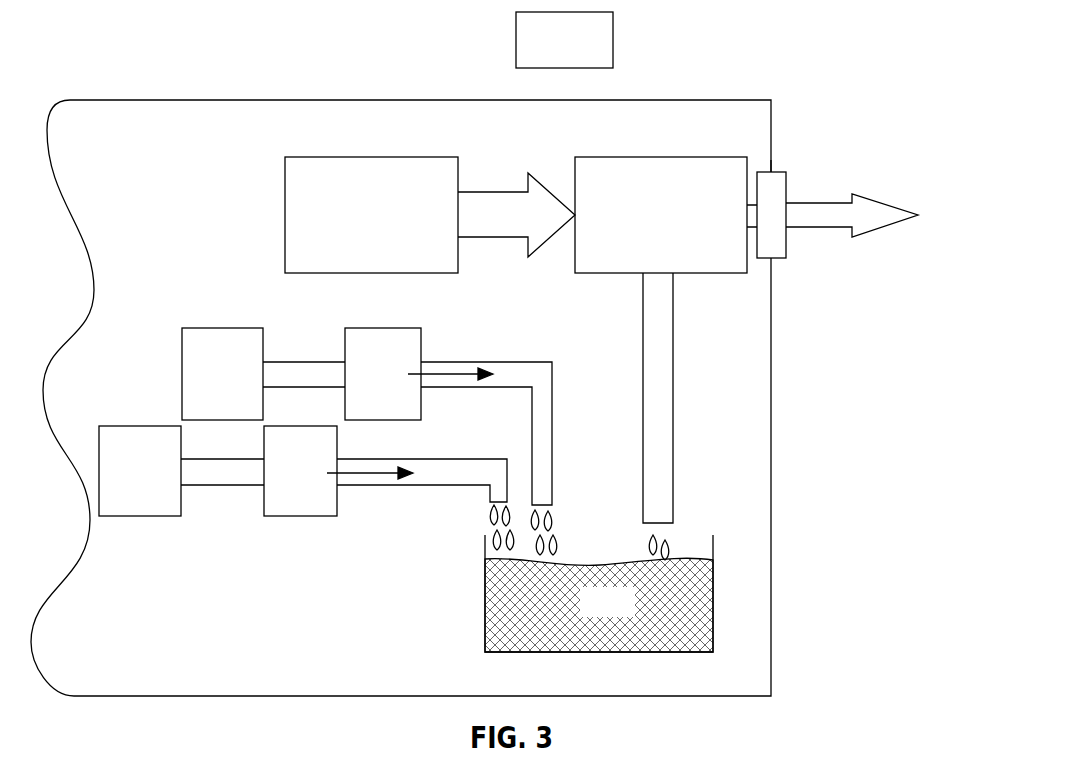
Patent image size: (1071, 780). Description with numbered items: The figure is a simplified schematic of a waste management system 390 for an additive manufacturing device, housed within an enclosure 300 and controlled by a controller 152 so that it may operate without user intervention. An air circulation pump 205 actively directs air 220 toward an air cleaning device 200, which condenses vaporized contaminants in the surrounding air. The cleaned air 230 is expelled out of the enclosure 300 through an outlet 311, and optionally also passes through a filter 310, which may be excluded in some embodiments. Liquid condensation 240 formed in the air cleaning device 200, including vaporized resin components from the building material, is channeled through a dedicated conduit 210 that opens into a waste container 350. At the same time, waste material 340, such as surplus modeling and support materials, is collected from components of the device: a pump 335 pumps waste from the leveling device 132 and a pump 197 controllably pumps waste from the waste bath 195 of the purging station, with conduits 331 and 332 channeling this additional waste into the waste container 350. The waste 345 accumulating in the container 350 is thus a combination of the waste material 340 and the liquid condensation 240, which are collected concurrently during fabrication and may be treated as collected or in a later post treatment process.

The controller 152 is at (586, 53).
The enclosure 300 is at (700, 100).
The waste management system 390 is at (217, 136).
The air circulation pump 205 is at (392, 228).
The air 220 is at (483, 193).
The air cleaning device 200 is at (682, 228).
The filter 310 is at (786, 187).
The outlet 311 is at (773, 172).
The air 230 is at (877, 200).
The conduit 210 is at (673, 335).
The liquid condensation 240 is at (670, 548).
The waste bath 195 is at (243, 387).
The pump 197 is at (404, 387).
The leveling device 132 is at (161, 484).
The pump 335 is at (321, 484).
The conduit 332 is at (553, 405).
The conduit 331 is at (432, 460).
The waste material 340 is at (490, 518).
The waste container 350 is at (484, 610).
The waste 345 is at (628, 615).